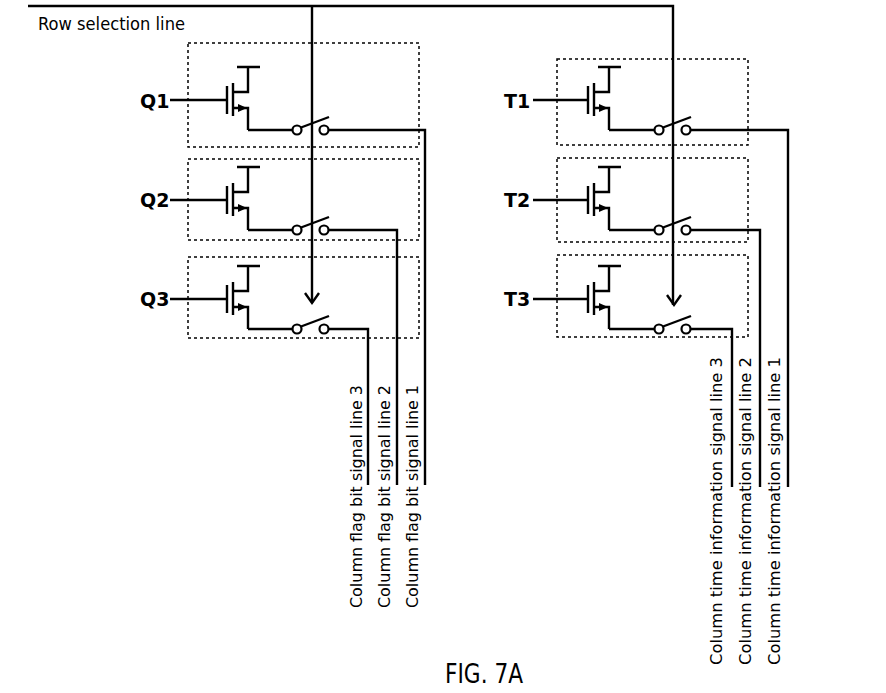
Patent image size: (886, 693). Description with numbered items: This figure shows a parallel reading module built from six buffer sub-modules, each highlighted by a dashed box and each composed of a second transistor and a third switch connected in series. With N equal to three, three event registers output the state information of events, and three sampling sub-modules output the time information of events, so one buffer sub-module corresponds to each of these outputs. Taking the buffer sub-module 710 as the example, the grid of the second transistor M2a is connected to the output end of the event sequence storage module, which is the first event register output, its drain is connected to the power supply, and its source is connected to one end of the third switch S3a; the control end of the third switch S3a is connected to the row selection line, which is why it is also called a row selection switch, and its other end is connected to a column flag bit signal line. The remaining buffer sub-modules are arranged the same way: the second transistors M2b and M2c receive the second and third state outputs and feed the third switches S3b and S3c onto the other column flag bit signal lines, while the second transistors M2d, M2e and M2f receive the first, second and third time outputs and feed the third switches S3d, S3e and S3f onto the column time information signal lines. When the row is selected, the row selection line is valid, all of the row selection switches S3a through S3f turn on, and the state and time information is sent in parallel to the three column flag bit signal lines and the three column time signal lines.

The buffer sub-module 710 is at (419, 65).
The second transistor M2a is at (231, 98).
The second transistor M2b is at (231, 198).
The second transistor M2c is at (230, 297).
The second transistor M2d is at (593, 98).
The second transistor M2e is at (593, 198).
The second transistor M2f is at (591, 297).
The third switch S3a is at (336, 295).
The third switch S3b is at (322, 345).
The third switch S3c is at (308, 394).
The third switch S3d is at (698, 296).
The third switch S3e is at (684, 346).
The third switch S3f is at (670, 395).